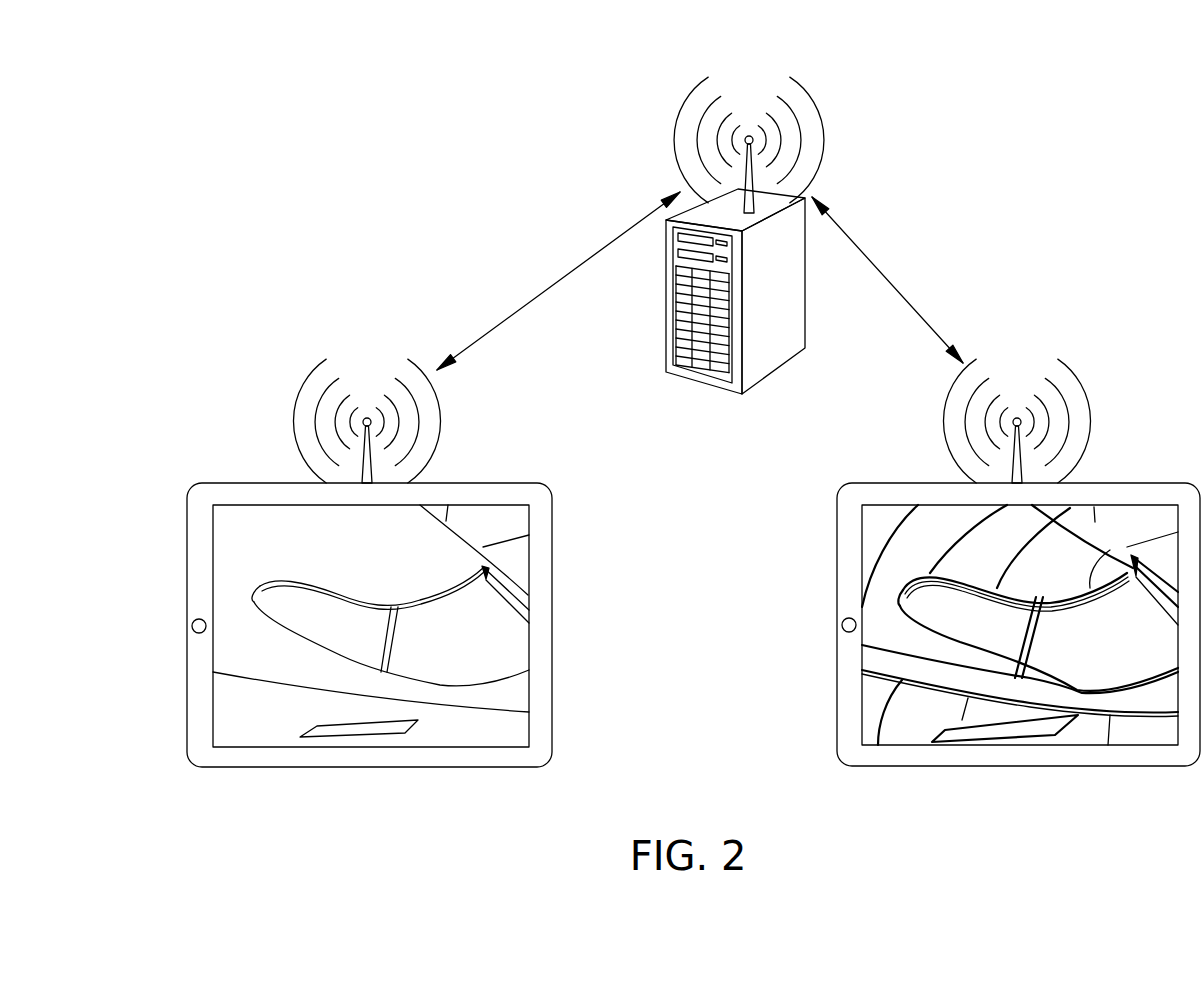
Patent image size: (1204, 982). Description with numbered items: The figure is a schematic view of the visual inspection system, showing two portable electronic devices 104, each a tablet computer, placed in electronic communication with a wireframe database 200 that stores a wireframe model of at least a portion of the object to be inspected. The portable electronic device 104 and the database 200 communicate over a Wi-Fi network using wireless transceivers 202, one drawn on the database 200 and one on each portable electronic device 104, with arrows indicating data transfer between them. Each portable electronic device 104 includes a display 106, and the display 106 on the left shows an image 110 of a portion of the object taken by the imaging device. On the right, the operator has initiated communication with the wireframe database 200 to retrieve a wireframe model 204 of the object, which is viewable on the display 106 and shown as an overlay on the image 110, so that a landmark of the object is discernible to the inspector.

The portable electronic device 104 is at (283, 767).
The display 106 is at (505, 525).
The image 110 is at (511, 730).
The wireframe database 200 is at (770, 360).
The wireless transceiver 202 is at (749, 134).
The wireframe model 204 is at (1120, 546).